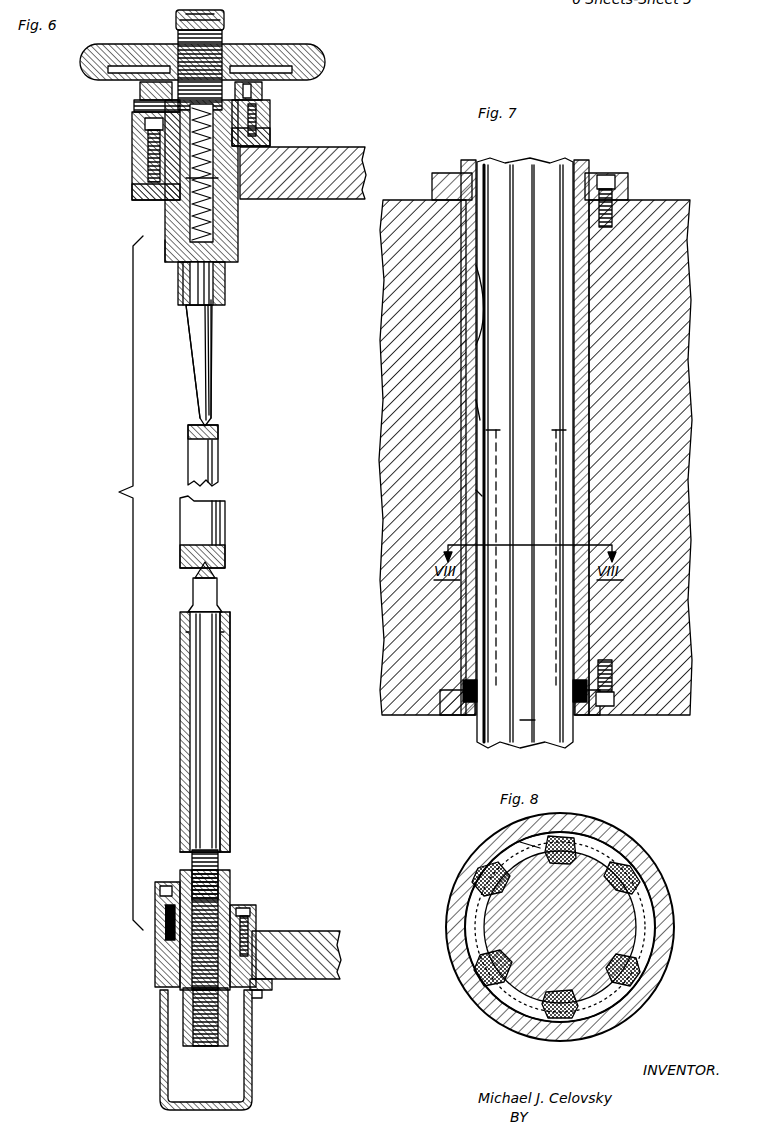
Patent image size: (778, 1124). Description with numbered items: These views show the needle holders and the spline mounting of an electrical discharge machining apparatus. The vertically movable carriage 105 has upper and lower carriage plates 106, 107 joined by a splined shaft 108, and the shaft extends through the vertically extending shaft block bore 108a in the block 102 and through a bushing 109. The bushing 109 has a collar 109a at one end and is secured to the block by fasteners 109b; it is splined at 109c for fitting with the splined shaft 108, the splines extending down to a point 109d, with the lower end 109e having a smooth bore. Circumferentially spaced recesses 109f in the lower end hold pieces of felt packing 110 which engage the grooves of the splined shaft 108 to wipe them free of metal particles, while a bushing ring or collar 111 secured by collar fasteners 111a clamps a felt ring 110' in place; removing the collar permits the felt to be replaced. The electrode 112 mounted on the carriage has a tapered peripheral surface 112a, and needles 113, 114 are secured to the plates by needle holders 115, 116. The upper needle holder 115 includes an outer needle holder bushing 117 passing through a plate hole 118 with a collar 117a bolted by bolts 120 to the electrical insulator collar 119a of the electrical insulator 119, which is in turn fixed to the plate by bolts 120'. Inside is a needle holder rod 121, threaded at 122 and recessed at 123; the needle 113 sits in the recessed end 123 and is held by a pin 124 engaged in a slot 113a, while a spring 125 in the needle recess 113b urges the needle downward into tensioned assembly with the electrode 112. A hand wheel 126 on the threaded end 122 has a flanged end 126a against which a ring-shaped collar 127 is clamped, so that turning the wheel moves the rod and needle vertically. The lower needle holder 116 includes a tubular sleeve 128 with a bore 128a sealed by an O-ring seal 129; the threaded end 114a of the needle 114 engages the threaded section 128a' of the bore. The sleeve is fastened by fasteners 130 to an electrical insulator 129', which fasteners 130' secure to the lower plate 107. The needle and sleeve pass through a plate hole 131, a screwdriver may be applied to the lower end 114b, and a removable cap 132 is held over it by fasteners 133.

In FIG. 7, the block 102 is at (660, 315).
In FIG. 6, the carriage 105 is at (232, 878).
In FIG. 6, the upper carriage plate 106 is at (345, 160).
In FIG. 6, the lower carriage plate 107 is at (328, 960).
In FIG. 7, the splined shaft 108 is at (525, 168).
In FIG. 8, the splined shaft 108 is at (616, 1018).
In FIG. 7, the shaft block bore 108a is at (590, 502).
In FIG. 7, the bushing 109 is at (590, 388).
In FIG. 8, the bushing 109 is at (660, 942).
In FIG. 7, the bushing collar 109a is at (460, 175).
In FIG. 7, the bushing fasteners 109b is at (606, 180).
In FIG. 7, the bushing splines 109c is at (476, 318).
In FIG. 7, the sleeve shoulder 109d is at (476, 415).
In FIG. 7, the lower end of bushing 109e is at (476, 494).
In FIG. 8, the lower end of bushing 109e is at (660, 915).
In FIG. 8, the recesses 109f is at (542, 850).
In FIG. 7, the felt packing pieces 110 is at (529, 745).
In FIG. 8, the felt packing pieces 110 is at (568, 927).
In FIG. 7, the felt ring 110' is at (523, 719).
In FIG. 7, the bushing ring or collar 111 is at (448, 703).
In FIG. 7, the collar fasteners 111a is at (606, 713).
In FIG. 6, the electrode 112 is at (218, 460).
In FIG. 6, the peripheral surface of electrode 112a is at (224, 525).
In FIG. 6, the needle 113 is at (208, 330).
In FIG. 6, the slot 113a is at (212, 318).
In FIG. 6, the needle recess 113b is at (168, 205).
In FIG. 6, the needle 114 is at (203, 687).
In FIG. 6, the threaded end of needle 114a is at (256, 918).
In FIG. 6, the lower end of needle 114b is at (206, 1050).
In FIG. 6, the needle holder 115 is at (238, 248).
In FIG. 6, the lower needle holder 116 is at (234, 785).
In FIG. 6, the outer needle holder bushing 117 is at (228, 278).
In FIG. 6, the bushing collar 117a is at (262, 112).
In FIG. 6, the plate hole 118 is at (242, 170).
In FIG. 6, the electrical insulator or bushing 119 is at (232, 212).
In FIG. 6, the electrical insulator collar 119a is at (132, 143).
In FIG. 6, the bolts 120 is at (267, 131).
In FIG. 6, the bolts 120' is at (135, 190).
In FIG. 6, the needle holder rod 121 is at (255, 100).
In FIG. 6, the threaded end of rod 122 is at (222, 30).
In FIG. 6, the recessed end of rod 123 is at (182, 270).
In FIG. 6, the pin 124 is at (210, 275).
In FIG. 6, the spring 125 is at (148, 155).
In FIG. 6, the hand wheel 126 is at (318, 62).
In FIG. 6, the flanged end of hand wheel 126a is at (136, 104).
In FIG. 6, the ring-shaped collar 127 is at (140, 88).
In FIG. 6, the tubular sleeve 128 is at (232, 818).
In FIG. 6, the bore 128a is at (255, 732).
In FIG. 6, the threaded section of bore 128a' is at (242, 930).
In FIG. 6, the O-ring seal 129 is at (181, 610).
In FIG. 6, the electrical insulator or bushing 129' is at (142, 934).
In FIG. 6, the fasteners 130 is at (145, 934).
In FIG. 6, the fasteners 130' is at (295, 987).
In FIG. 6, the plate hole 131 is at (252, 935).
In FIG. 6, the removable cap 132 is at (252, 1085).
In FIG. 6, the fasteners 133 is at (258, 992).